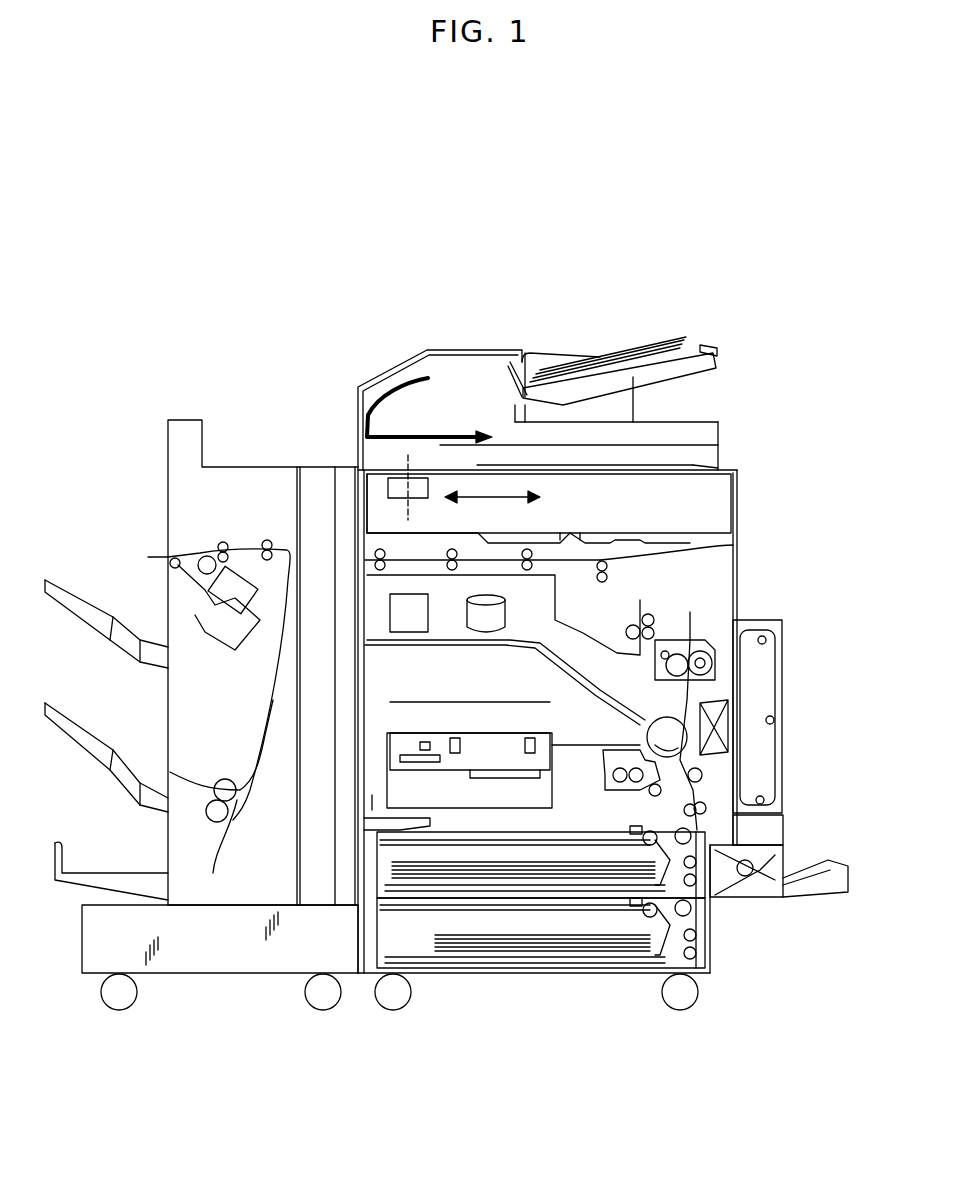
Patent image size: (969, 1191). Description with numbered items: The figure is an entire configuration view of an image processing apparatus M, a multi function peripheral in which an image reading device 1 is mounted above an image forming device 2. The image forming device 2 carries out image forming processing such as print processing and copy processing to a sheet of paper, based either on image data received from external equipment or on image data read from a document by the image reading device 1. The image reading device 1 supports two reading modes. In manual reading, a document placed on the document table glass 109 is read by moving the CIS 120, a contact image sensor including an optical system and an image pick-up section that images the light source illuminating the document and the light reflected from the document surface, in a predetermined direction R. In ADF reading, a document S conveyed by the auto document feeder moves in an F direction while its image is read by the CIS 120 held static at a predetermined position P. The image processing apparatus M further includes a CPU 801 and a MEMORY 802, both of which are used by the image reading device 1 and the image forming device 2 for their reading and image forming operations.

The image processing apparatus M is at (352, 303).
The F direction F is at (360, 387).
The image reading device 1 is at (858, 343).
The image forming device 2 is at (858, 980).
The original document S is at (617, 357).
The predetermined direction R is at (513, 493).
The predetermined position P is at (414, 495).
The document table glass 109 is at (423, 478).
The CIS 120 is at (388, 490).
The CPU 801 is at (390, 612).
The MEMORY 802 is at (505, 613).